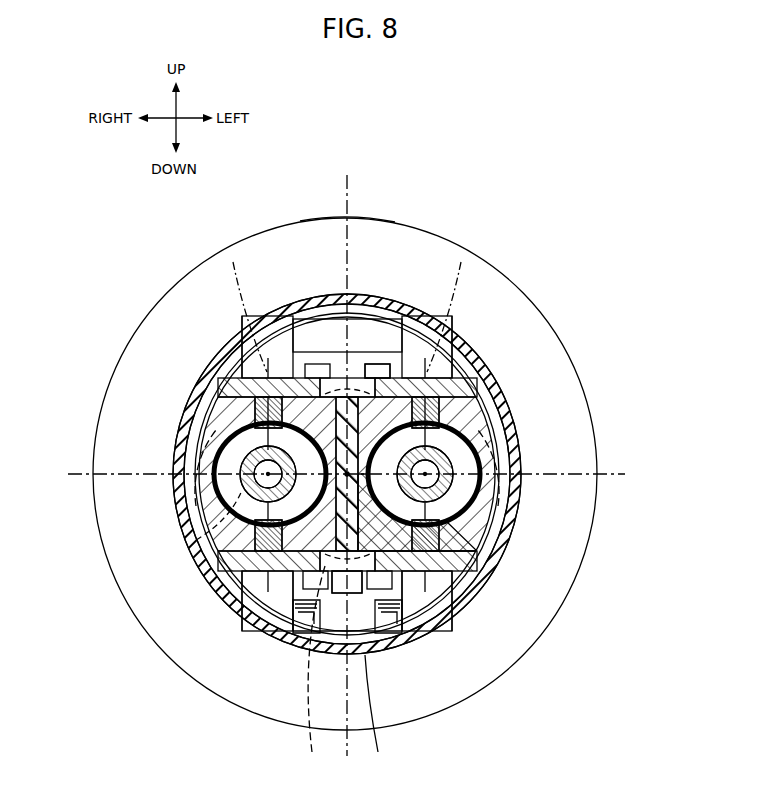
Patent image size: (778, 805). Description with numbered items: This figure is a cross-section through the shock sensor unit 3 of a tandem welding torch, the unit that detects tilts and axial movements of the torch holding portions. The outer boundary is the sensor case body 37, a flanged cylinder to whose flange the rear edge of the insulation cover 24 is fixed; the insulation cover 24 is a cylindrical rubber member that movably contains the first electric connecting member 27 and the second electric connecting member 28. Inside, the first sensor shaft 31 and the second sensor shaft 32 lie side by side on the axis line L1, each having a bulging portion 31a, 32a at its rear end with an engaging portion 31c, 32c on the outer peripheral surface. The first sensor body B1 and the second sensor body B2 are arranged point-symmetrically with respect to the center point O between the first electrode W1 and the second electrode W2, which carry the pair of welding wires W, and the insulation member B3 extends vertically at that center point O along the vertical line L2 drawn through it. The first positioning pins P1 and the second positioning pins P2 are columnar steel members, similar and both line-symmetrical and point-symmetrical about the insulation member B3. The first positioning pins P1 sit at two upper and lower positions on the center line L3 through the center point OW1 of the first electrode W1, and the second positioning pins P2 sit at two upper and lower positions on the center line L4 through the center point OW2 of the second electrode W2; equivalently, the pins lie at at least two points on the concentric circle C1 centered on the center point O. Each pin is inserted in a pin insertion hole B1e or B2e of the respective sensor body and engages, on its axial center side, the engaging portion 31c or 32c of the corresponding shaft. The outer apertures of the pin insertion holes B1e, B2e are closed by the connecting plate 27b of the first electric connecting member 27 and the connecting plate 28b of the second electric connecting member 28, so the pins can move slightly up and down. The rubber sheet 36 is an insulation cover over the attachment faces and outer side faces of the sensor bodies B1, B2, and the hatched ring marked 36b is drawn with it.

The shock sensor unit 3 is at (428, 155).
The sensor case body 37 is at (325, 226).
The insulation cover 24 is at (313, 347).
The first electric connecting member 27 is at (378, 378).
The connecting plate 27b is at (377, 371).
The second electric connecting member 28 is at (240, 613).
The connecting plate 28b is at (347, 582).
The first sensor shaft 31 is at (226, 445).
The bulging portion 31a is at (222, 465).
The engaging portion 31c is at (217, 413).
The second sensor shaft 32 is at (468, 445).
The bulging portion 32a is at (473, 465).
The engaging portion 32c is at (478, 413).
The rubber sheet 36 is at (222, 500).
The bearing outer ring 36b is at (472, 500).
The first sensor body B1 is at (206, 378).
The pin insertion hole B1e is at (240, 368).
The second sensor body B2 is at (488, 378).
The pin insertion hole B2e is at (453, 368).
The insulation member B3 is at (377, 716).
The first positioning pins P1 is at (223, 375).
The second positioning pins P2 is at (471, 375).
The axis line L1 is at (597, 471).
The vertical axis L2 is at (349, 200).
The center line L3 is at (233, 262).
The center line L4 is at (461, 262).
The center point OW1 is at (192, 502).
The center point OW2 is at (502, 502).
The first electrode W1 is at (195, 540).
The second electrode W2 is at (499, 540).
The welding wires W is at (219, 515).
The concentric circle C1 is at (310, 671).
The center point O is at (413, 640).